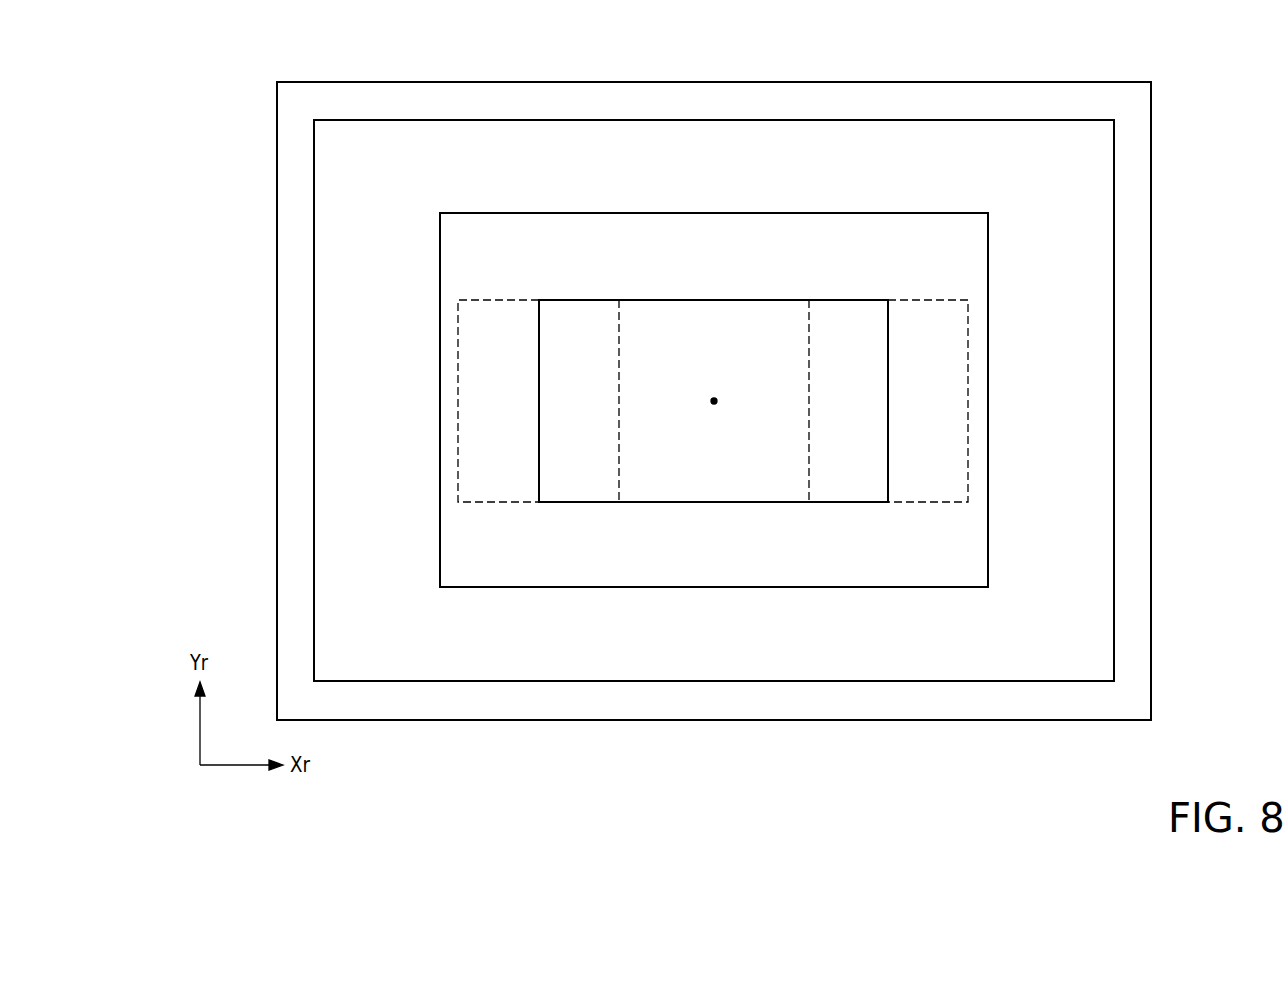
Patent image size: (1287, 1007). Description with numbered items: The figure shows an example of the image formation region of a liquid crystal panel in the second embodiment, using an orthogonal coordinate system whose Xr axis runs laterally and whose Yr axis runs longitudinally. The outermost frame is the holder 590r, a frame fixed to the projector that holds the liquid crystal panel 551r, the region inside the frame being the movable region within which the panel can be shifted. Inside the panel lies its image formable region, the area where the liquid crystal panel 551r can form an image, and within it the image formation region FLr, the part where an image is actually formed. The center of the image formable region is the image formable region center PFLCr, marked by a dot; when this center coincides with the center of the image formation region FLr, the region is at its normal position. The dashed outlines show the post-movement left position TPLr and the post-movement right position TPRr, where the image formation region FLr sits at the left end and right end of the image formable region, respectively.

The holder 590r is at (1040, 82).
The liquid crystal panel 551r is at (989, 252).
The post-movement left position TPLr is at (458, 429).
The post-movement right position TPRr is at (968, 428).
The image formation region FLr is at (858, 502).
The image formable region center PFLCr is at (714, 401).